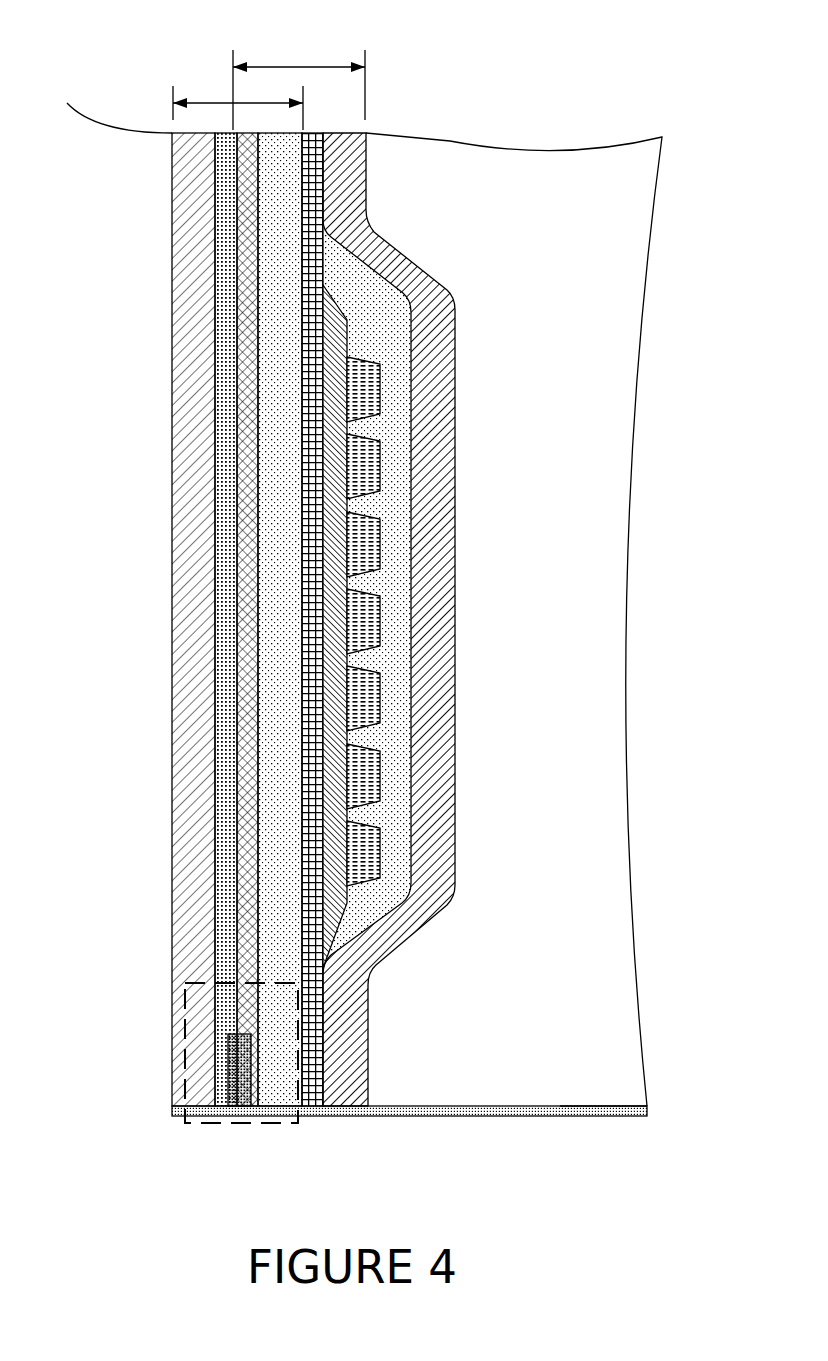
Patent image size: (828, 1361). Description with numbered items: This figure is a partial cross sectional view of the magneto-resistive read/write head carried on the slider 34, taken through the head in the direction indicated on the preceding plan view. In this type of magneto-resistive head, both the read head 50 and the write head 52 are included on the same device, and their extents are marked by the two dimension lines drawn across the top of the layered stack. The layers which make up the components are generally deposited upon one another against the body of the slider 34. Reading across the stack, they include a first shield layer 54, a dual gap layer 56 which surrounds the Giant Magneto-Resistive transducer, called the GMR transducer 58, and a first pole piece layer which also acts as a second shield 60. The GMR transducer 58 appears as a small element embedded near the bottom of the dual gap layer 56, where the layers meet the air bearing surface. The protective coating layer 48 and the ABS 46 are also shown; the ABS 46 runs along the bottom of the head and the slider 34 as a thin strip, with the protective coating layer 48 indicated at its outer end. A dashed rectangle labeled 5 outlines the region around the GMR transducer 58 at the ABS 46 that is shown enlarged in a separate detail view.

The detail region of FIG. 5 is at (195, 1125).
The slider 34 is at (598, 513).
The ABS 46 is at (438, 1130).
The protective coating layer 48 is at (608, 1108).
The read head 50 is at (207, 100).
The write head 52 is at (293, 67).
The first shield layer 54 is at (195, 958).
The dual gap layer 56 is at (237, 750).
The GMR transducer 58 is at (237, 1090).
The second shield 60 is at (287, 561).